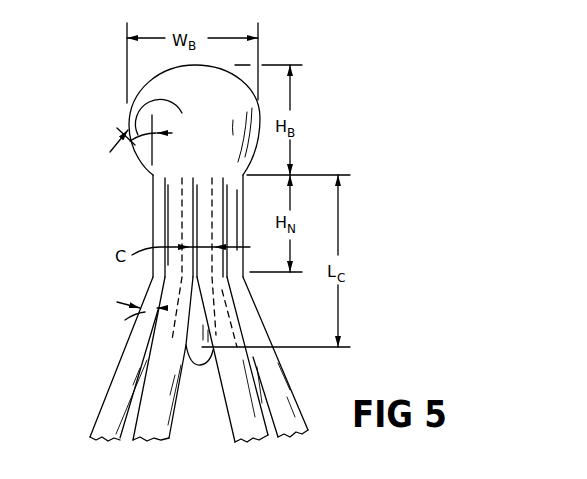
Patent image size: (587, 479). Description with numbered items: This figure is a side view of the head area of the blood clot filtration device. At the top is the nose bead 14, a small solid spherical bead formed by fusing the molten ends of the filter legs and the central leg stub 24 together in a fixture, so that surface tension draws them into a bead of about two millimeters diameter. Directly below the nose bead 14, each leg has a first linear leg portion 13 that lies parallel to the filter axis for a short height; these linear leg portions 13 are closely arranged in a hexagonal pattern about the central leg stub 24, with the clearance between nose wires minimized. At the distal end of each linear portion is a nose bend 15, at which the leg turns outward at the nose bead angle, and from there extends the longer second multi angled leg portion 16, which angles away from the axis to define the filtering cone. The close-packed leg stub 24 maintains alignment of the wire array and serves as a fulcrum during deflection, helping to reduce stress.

The first linear leg portion 13 is at (168, 211).
The nose bead 14 is at (128, 118).
The nose bend 15 is at (153, 277).
The second multi angled leg portion 16 is at (112, 383).
The central leg stub 24 is at (196, 366).